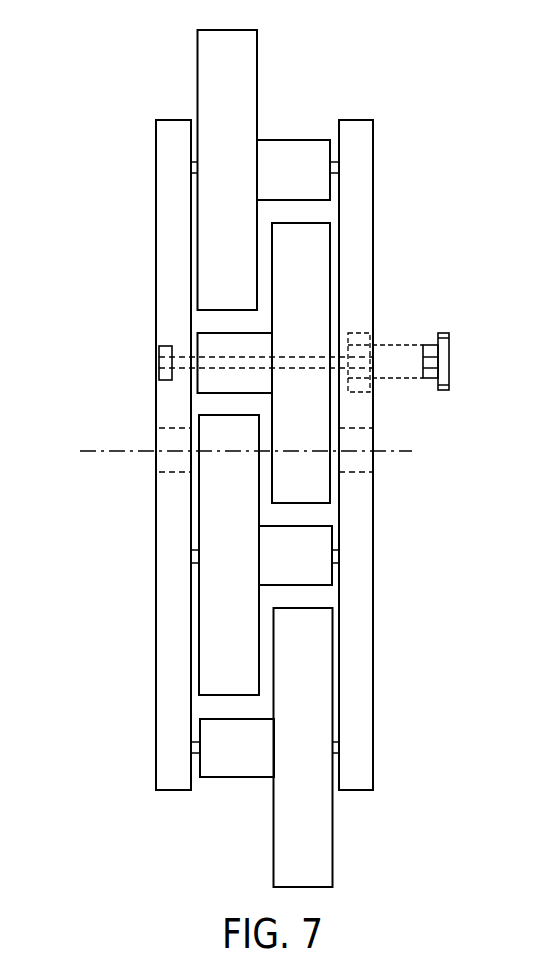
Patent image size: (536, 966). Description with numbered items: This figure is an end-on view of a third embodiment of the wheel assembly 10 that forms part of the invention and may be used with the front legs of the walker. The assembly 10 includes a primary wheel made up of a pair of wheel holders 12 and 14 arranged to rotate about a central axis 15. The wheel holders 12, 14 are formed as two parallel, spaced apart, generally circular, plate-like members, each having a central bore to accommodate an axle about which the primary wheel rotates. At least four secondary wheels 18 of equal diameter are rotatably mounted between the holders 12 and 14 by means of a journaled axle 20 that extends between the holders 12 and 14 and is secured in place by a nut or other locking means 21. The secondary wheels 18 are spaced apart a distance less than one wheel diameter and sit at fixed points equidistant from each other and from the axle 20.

The wheel assembly 10 is at (269, 458).
The wheel holder 12 is at (357, 171).
The wheel holder 14 is at (173, 262).
The central axis 15 is at (131, 450).
The secondary wheel 18 is at (243, 53).
The journaled axle 20 is at (230, 360).
The nut or other locking means 21 is at (445, 343).